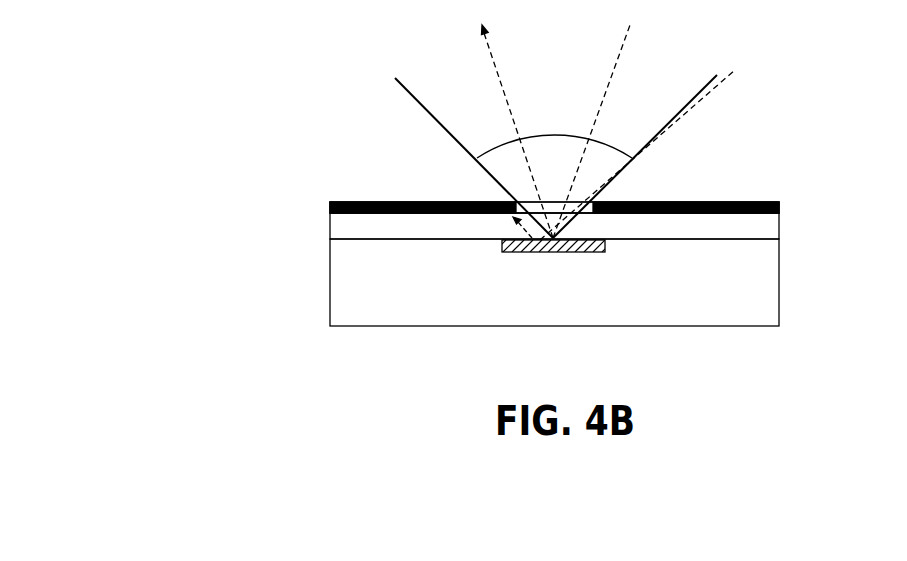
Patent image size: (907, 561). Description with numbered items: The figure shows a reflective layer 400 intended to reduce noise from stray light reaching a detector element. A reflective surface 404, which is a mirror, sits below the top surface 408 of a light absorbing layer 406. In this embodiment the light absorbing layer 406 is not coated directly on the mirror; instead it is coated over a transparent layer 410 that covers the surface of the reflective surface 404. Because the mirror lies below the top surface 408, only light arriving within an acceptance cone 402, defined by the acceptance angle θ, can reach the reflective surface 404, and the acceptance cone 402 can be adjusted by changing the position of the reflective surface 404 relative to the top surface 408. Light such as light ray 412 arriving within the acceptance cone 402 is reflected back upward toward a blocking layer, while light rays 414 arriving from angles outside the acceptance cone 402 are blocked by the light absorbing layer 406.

The reflective layer 400 is at (235, 268).
The acceptance cone 402 is at (418, 102).
The reflective surface 404 is at (556, 252).
The light absorbing layer 406 is at (322, 203).
The top surface 408 is at (752, 202).
The transparent layer 410 is at (780, 227).
The light ray 412 is at (500, 80).
The light rays 414 is at (612, 183).